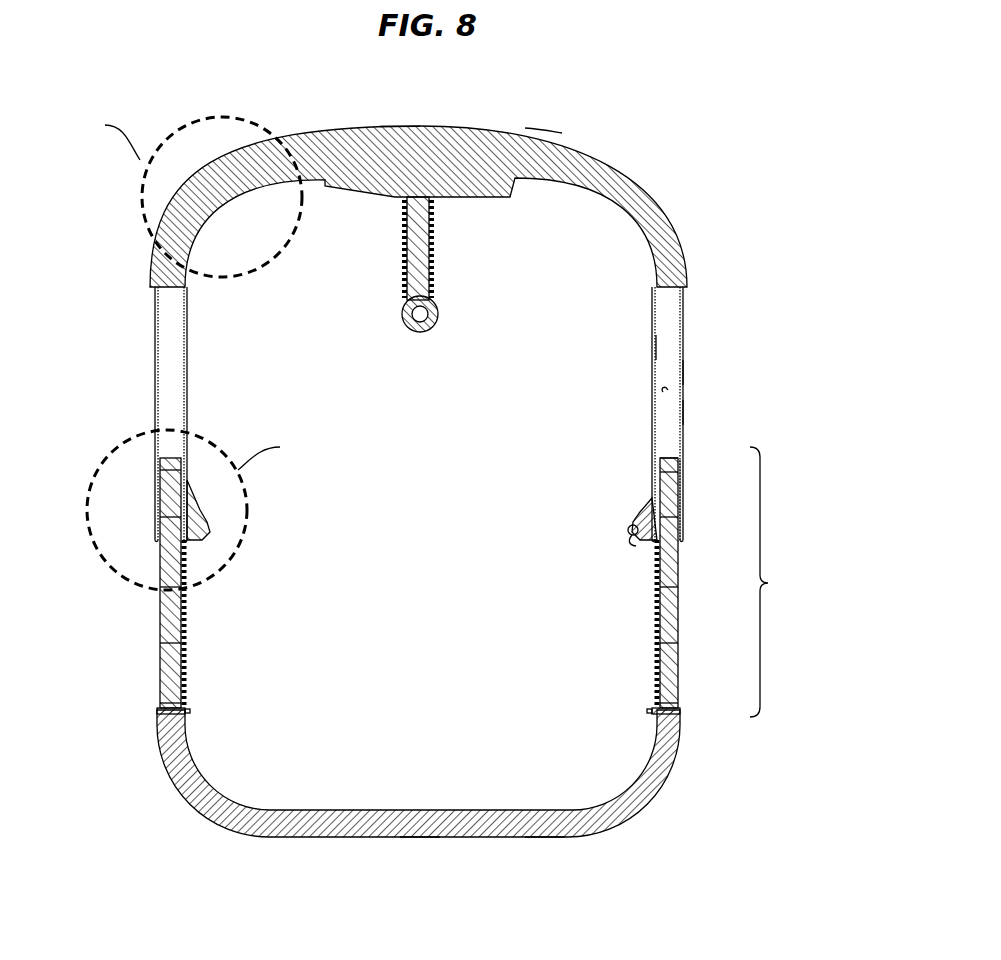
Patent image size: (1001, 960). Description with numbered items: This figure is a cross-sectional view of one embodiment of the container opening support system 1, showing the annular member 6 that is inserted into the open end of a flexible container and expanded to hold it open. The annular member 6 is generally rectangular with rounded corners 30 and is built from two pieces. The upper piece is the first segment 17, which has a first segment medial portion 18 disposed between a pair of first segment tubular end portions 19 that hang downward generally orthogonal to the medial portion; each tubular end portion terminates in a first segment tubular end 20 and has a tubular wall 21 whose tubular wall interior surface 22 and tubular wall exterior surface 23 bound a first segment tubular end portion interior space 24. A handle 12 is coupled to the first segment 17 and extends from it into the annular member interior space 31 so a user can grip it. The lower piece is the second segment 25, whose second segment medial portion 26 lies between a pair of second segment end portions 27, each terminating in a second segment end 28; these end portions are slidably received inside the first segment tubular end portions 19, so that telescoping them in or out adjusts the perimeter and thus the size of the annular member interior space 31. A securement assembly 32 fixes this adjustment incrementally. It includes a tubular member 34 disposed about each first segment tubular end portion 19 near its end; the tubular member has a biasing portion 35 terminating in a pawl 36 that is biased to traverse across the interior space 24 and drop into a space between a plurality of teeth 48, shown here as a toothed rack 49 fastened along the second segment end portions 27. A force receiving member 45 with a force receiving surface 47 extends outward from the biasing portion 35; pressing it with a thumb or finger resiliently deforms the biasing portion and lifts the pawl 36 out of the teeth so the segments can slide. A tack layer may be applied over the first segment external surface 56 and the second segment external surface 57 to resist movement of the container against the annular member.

The container opening support system 1 is at (736, 60).
The annular member 6 is at (615, 122).
The handle 12 is at (438, 305).
The first segment 17 is at (635, 165).
The first segment medial portion 18 is at (396, 126).
The first segment tubular end portions 19 is at (155, 352).
The first segment tubular end 20 is at (683, 540).
The tubular wall 21 is at (684, 372).
The tubular wall interior surface 22 is at (668, 390).
The tubular wall exterior surface 23 is at (684, 410).
The first segment tubular end portion interior space 24 is at (677, 360).
The second segment 25 is at (672, 800).
The second segment medial portion 26 is at (420, 838).
The second segment end portions 27 is at (678, 628).
The second segment end 28 is at (675, 460).
The corners 30 is at (637, 812).
The annular member interior space 31 is at (430, 544).
The securement assembly 32 is at (775, 582).
The tubular member 34 is at (640, 475).
The biasing portion 35 is at (640, 506).
The pawl 36 is at (657, 545).
The force receiving member 45 is at (635, 520).
The force receiving surface 47 is at (636, 540).
The plurality of teeth 48 is at (658, 627).
The toothed rack 49 is at (658, 690).
The first segment external surface 56 is at (545, 130).
The second segment external surface 57 is at (546, 838).